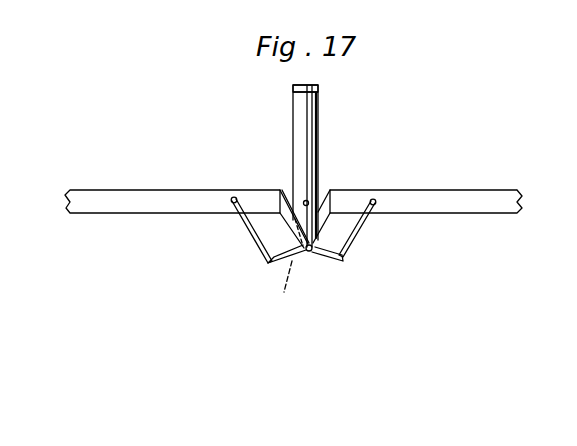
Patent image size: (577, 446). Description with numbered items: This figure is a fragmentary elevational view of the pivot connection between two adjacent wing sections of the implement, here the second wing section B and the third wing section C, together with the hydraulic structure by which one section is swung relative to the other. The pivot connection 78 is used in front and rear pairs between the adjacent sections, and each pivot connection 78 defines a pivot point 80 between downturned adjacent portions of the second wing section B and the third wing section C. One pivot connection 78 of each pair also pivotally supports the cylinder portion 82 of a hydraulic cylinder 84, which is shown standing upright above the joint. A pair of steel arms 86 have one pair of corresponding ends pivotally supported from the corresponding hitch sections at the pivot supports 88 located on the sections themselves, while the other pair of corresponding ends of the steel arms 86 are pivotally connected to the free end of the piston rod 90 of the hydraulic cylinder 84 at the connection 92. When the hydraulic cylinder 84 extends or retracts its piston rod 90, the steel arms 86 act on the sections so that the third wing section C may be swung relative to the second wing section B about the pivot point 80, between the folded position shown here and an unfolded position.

The pivot connection 78 is at (283, 236).
The pivot point 80 is at (348, 250).
The cylinder portion 82 is at (316, 158).
The hydraulic cylinder 84 is at (298, 122).
The steel arms 86 is at (247, 224).
The arm pivot support 88 is at (257, 168).
The piston rod 90 is at (311, 252).
The piston rod pivot connection 92 is at (272, 285).
The second wing section B is at (134, 200).
The third wing section C is at (428, 198).